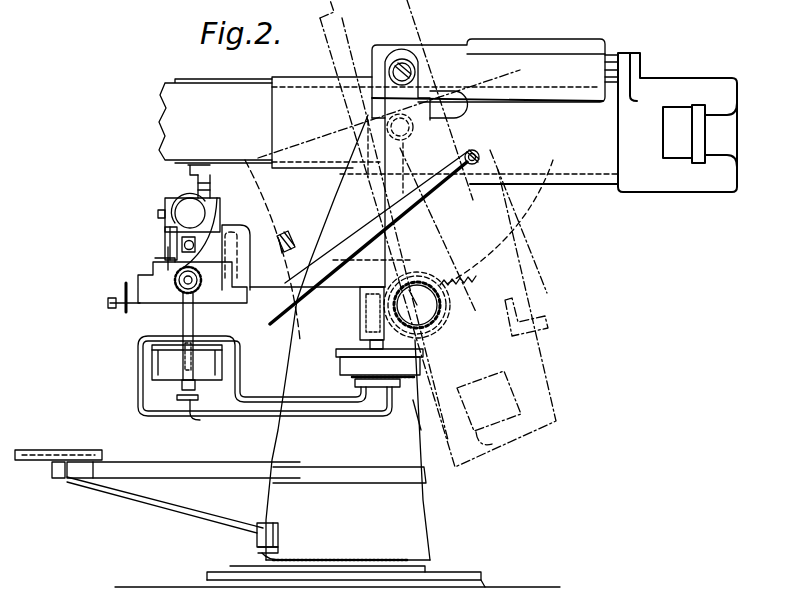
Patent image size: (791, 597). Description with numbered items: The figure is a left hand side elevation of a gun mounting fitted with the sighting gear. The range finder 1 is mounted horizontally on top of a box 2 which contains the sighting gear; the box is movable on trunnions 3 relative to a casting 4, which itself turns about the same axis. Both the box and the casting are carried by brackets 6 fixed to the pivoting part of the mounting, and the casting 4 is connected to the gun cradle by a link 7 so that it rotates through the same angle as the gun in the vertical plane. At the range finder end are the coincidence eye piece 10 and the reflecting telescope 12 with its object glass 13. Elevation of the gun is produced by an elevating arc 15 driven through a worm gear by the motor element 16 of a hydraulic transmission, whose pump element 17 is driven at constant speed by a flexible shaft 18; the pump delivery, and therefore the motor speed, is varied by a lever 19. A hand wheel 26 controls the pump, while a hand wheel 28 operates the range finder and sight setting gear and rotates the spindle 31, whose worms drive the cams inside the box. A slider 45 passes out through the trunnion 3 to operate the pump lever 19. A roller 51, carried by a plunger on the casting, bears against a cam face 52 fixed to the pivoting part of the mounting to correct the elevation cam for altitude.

The range finder 1 is at (190, 213).
The box 2 is at (152, 283).
The trunnions 3 is at (160, 305).
The casting 4 is at (252, 232).
The brackets 6 is at (320, 335).
The link 7 is at (348, 256).
The coincidence eye piece 10 is at (164, 214).
The reflecting telescope 12 is at (200, 187).
The object glass 13 is at (188, 170).
The elevating arc 15 is at (548, 208).
The motor element 16 is at (423, 420).
The pump element 17 is at (162, 363).
The flexible shaft 18 is at (200, 420).
The lever 19 is at (185, 325).
The hand wheel 26 is at (124, 292).
The hand wheel 28 is at (175, 234).
The spindle 31 is at (209, 208).
The slider 45 is at (198, 292).
The roller 51 is at (283, 238).
The cam face 52 is at (293, 232).